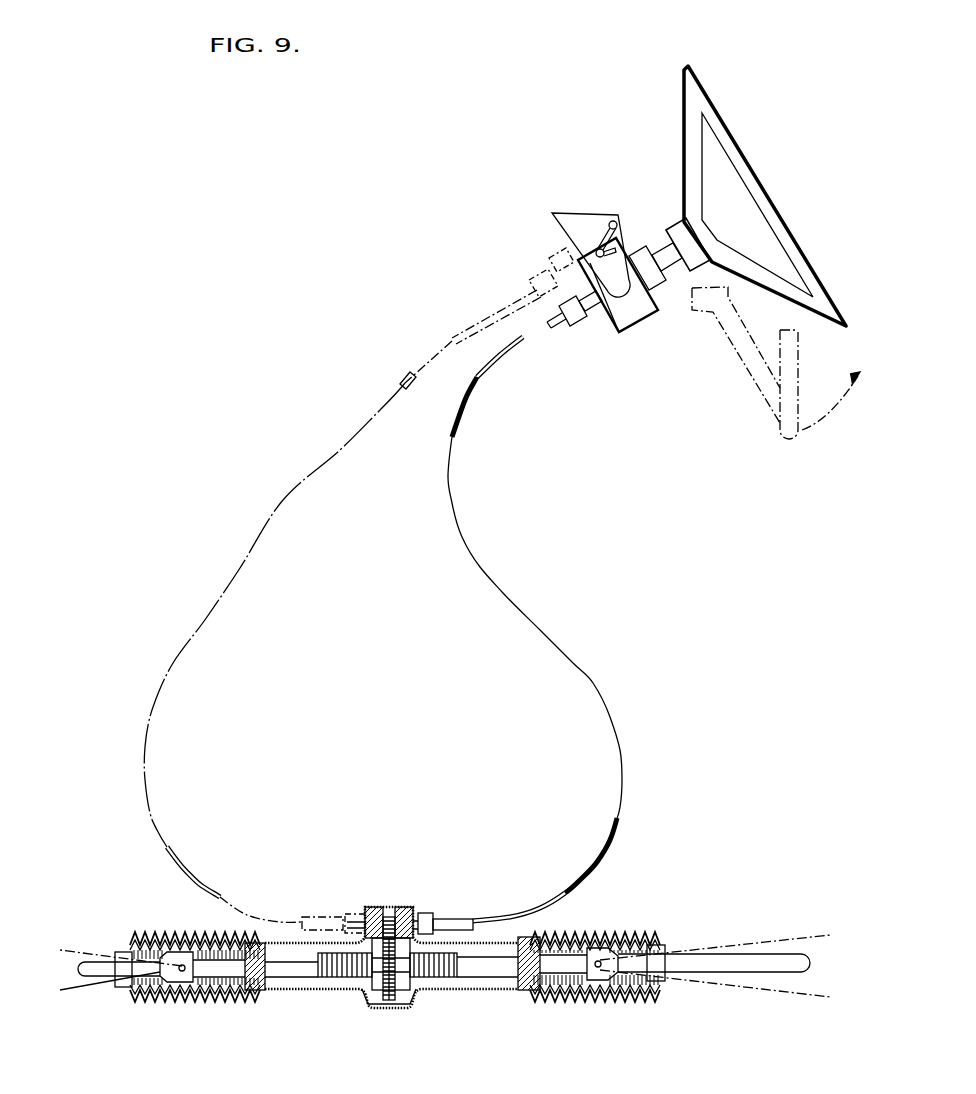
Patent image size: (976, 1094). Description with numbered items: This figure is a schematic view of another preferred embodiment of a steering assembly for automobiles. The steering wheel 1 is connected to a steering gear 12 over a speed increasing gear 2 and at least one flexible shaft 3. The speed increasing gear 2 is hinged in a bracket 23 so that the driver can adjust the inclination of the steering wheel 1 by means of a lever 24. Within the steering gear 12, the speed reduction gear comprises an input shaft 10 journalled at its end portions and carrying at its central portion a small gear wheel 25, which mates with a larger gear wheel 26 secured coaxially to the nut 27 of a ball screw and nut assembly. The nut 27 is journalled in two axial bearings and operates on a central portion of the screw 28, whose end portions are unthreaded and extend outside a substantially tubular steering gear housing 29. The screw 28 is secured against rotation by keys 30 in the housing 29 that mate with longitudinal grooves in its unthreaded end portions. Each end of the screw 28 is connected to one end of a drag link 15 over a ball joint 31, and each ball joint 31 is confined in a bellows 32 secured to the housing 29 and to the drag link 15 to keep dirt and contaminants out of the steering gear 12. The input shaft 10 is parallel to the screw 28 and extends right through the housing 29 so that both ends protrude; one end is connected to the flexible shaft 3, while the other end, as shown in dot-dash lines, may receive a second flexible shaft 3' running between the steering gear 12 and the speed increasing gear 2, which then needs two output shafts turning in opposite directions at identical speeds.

The steering wheel 1 is at (710, 92).
The speed increasing gear 2 is at (641, 312).
The flexible shaft 3 is at (517, 623).
The second flexible shaft 3' is at (359, 590).
The input shaft 10 is at (405, 903).
The steering gear 12 is at (357, 1003).
The drag link 15 is at (97, 972).
The bracket 23 is at (573, 220).
The lever 24 is at (602, 247).
The small gear wheel 25 is at (388, 917).
The larger gear wheel 26 is at (388, 1000).
The nut 27 is at (402, 984).
The screw 28 is at (455, 978).
The steering gear housing 29 is at (337, 994).
The keys 30 is at (277, 982).
The ball joint 31 is at (183, 982).
The bellows 32 is at (148, 934).